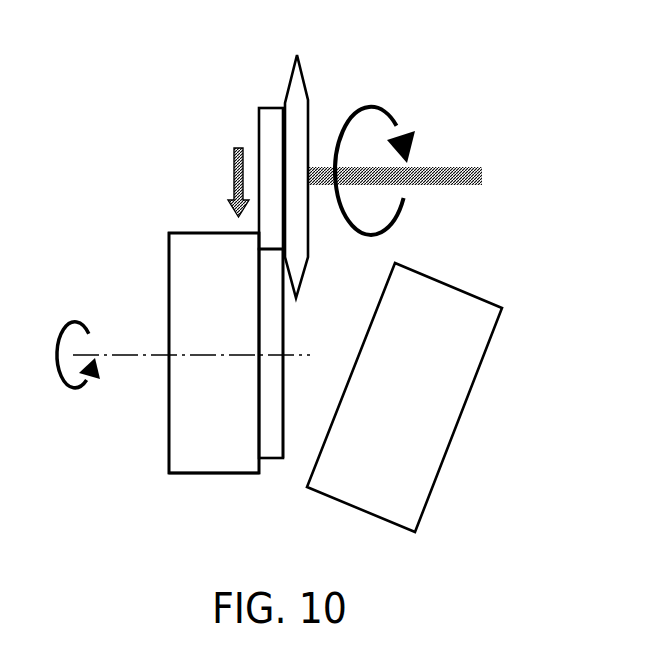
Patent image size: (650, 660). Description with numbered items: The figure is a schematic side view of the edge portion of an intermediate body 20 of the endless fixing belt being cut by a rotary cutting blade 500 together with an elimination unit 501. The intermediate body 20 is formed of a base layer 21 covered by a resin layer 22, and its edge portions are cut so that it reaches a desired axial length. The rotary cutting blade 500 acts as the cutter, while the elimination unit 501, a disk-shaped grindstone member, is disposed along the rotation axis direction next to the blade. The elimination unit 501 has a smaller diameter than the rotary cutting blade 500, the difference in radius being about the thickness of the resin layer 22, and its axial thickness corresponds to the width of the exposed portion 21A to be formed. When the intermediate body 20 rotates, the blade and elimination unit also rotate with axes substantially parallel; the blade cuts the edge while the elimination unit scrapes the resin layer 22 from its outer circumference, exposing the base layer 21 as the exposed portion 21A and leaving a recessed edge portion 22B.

The intermediate body 20 is at (187, 219).
The base layer 21 is at (273, 461).
The exposed portion 21A is at (271, 396).
The resin layer 22 is at (185, 476).
The edge portion 22B is at (246, 483).
The rotary cutting blade 500 is at (302, 97).
The elimination unit 501 is at (270, 112).